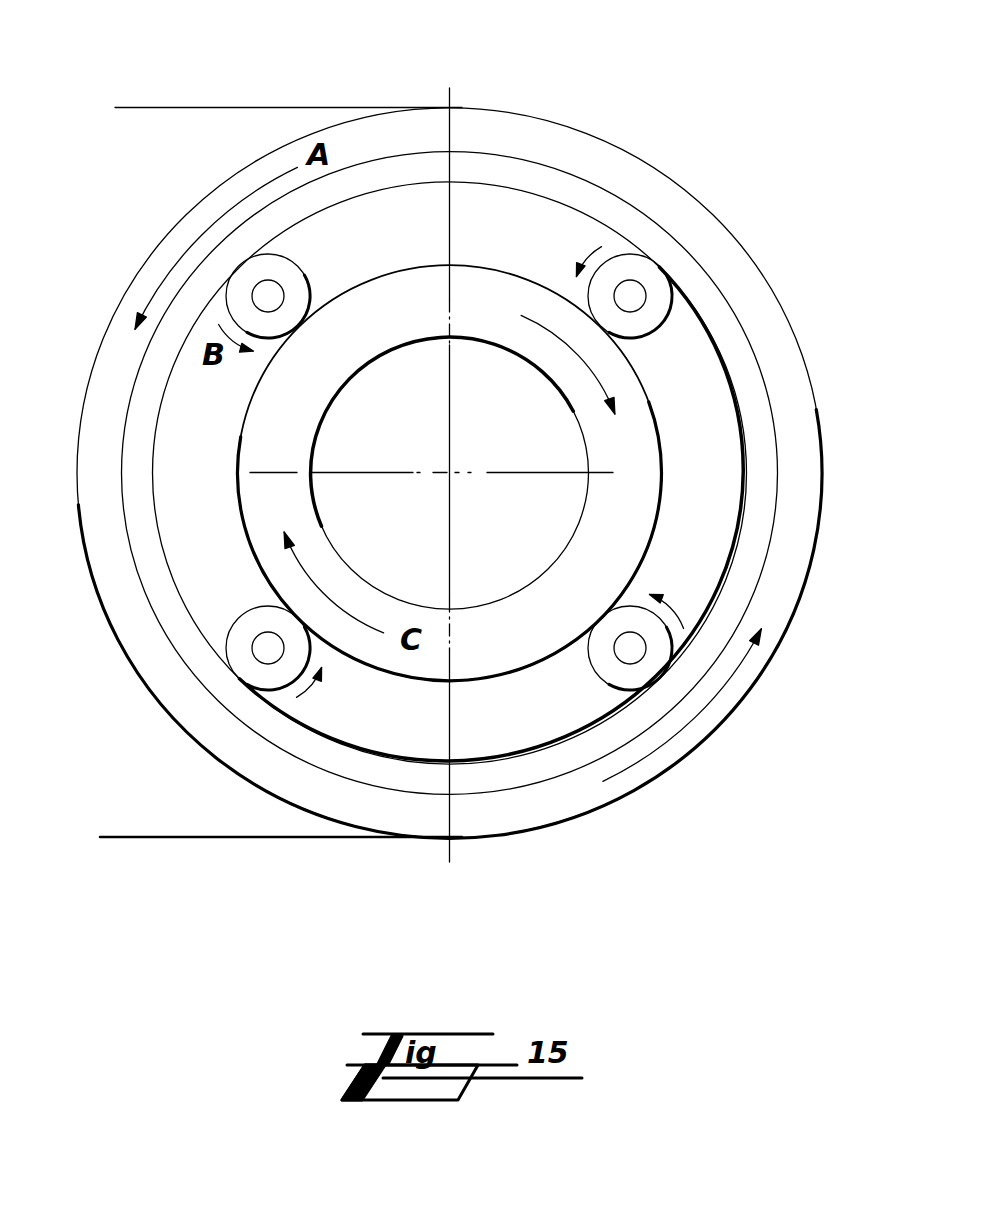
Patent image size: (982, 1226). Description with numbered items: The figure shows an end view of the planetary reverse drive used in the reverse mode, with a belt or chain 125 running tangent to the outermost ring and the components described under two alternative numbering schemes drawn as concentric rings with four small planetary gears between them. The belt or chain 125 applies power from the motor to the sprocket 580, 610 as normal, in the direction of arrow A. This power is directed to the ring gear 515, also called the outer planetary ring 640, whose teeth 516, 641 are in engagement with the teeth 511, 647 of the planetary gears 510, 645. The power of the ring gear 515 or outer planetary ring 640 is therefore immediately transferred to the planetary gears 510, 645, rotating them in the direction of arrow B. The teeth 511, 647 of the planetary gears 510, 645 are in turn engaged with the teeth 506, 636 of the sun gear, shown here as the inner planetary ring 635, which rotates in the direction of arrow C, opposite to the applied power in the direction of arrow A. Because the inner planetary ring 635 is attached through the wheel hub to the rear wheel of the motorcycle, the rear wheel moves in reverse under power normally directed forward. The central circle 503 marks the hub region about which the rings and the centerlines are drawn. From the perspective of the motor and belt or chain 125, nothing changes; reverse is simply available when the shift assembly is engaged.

The belt or chain 125 is at (260, 107).
The shaft 503 is at (429, 475).
The teeth of the sun gear 506 is at (422, 489).
The planetary gears 510 is at (724, 233).
The teeth of the planetary gears 511 is at (711, 206).
The ring gear 515 is at (407, 473).
The teeth of the ring gear 516 is at (347, 480).
The sprocket 580 is at (442, 473).
The sprocket 610 is at (196, 203).
The inner planetary ring 635 is at (315, 422).
The teeth of the inner planetary ring 636 is at (152, 511).
The outer planetary ring 640 is at (142, 403).
The teeth of the outer planetary ring 641 is at (267, 582).
The planetary gears 645 is at (659, 307).
The teeth of the planetary gears 647 is at (626, 256).